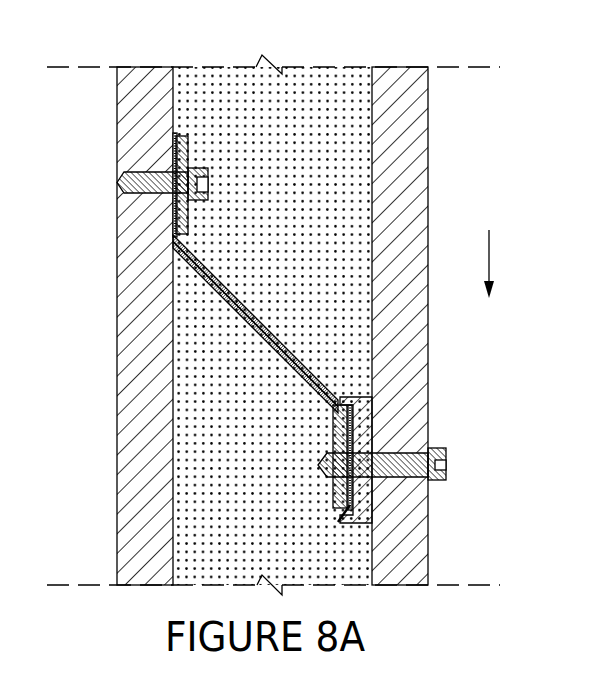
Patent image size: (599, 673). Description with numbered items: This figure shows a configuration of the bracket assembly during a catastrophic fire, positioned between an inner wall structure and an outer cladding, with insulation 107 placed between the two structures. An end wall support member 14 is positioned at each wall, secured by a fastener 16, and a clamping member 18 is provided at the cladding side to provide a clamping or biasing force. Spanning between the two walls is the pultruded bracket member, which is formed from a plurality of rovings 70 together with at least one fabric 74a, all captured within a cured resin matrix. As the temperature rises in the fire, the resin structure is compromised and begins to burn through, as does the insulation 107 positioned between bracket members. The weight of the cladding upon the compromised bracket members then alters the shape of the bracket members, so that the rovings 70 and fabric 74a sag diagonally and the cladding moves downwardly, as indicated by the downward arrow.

The insulation 107 is at (306, 86).
The end wall support member 14 is at (189, 152).
The fastener 16 is at (208, 184).
The clamping member 18 is at (352, 397).
The rovings 70 is at (284, 352).
The fabric 74a is at (263, 316).